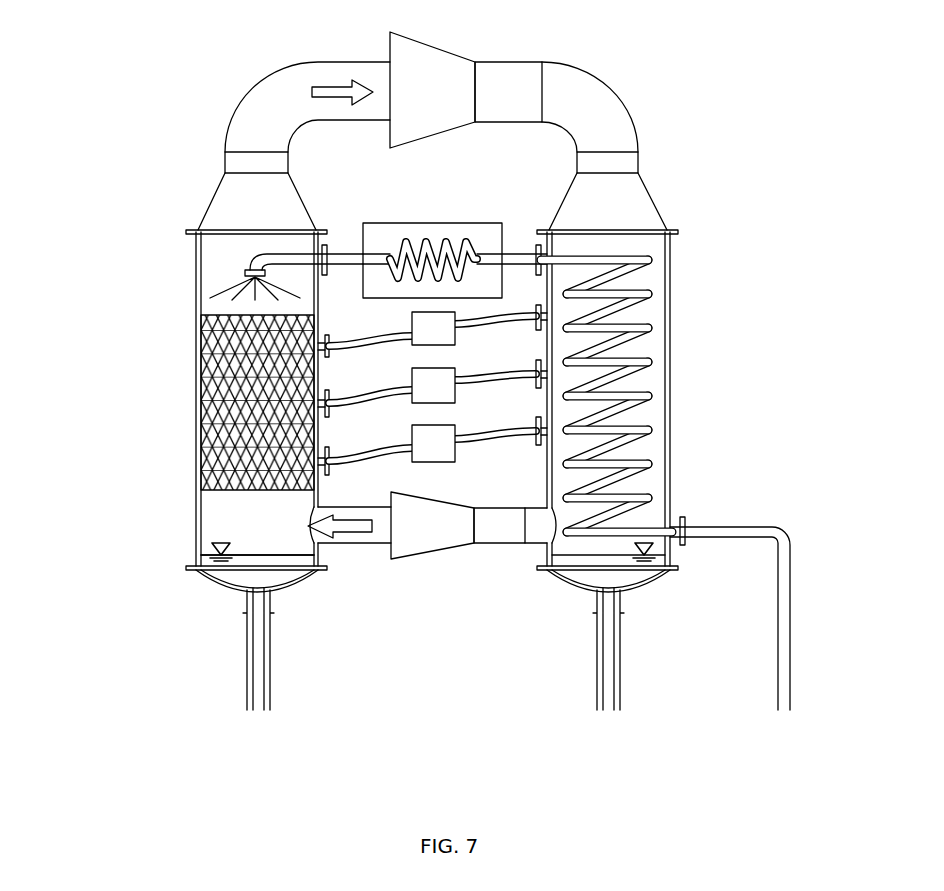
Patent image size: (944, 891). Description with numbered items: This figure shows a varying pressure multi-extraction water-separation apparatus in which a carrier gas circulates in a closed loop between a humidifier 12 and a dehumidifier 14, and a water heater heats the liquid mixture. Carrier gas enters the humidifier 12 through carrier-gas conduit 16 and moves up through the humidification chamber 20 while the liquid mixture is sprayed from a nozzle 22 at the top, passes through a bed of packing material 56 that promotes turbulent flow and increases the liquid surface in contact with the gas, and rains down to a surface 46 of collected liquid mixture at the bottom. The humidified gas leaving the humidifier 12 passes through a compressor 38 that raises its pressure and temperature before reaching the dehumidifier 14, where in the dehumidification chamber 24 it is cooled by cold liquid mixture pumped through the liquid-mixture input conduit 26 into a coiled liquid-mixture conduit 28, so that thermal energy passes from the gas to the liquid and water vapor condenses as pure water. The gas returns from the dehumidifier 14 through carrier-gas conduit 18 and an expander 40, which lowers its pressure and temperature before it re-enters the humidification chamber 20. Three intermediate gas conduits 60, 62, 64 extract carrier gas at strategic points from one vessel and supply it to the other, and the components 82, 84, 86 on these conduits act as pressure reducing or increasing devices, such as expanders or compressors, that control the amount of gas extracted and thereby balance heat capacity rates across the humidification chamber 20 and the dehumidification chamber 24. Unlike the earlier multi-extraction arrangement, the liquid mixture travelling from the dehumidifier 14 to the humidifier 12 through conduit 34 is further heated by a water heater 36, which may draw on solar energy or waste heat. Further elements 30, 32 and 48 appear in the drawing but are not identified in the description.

The humidifier 12 is at (213, 465).
The dehumidifier 14 is at (698, 470).
The carrier-gas conduit 16 is at (496, 103).
The carrier-gas conduit 18 is at (488, 537).
The humidification chamber 20 is at (245, 531).
The nozzle 22 is at (245, 271).
The dehumidification chamber 24 is at (653, 277).
The liquid-mixture input conduit 26 is at (790, 680).
The coiled liquid-mixture conduit 28 is at (645, 396).
The drain pipe 30 is at (270, 688).
The drain pipe 32 is at (620, 688).
The conduit 34 is at (515, 240).
The water heater 36 is at (410, 222).
The compressor 38 is at (420, 103).
The expander 40 is at (420, 537).
The surface of collected liquid mixture 46 is at (283, 552).
The liquid level 48 is at (583, 552).
The packing material 56 is at (200, 376).
The gas conduit 60 is at (388, 340).
The gas conduit 62 is at (405, 386).
The gas conduit 64 is at (405, 447).
The component 82 is at (421, 339).
The component 84 is at (421, 396).
The component 86 is at (421, 454).